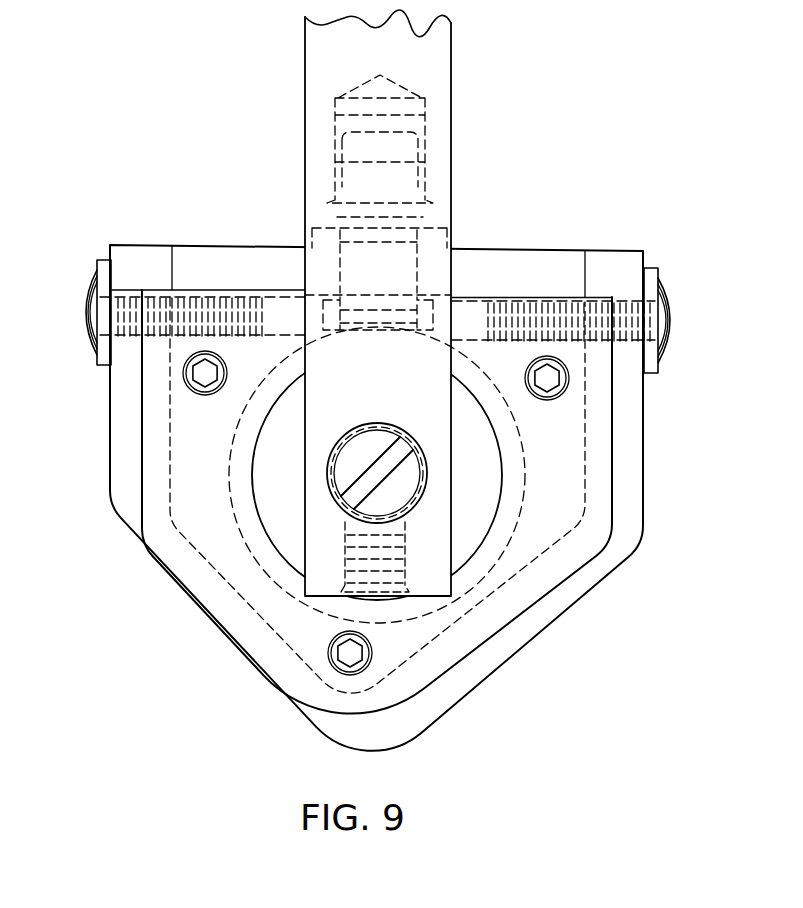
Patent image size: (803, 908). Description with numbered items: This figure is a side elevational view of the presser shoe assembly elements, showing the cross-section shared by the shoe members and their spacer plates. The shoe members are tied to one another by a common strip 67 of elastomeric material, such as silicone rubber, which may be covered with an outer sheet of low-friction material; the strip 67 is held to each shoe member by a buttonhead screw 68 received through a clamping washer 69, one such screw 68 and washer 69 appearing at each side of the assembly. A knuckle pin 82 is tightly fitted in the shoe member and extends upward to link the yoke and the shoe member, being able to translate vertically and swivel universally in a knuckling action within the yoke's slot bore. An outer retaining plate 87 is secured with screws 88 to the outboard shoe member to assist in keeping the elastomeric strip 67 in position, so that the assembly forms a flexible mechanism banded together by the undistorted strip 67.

The strip of elastomeric material 67 is at (641, 249).
The buttonhead screw 68 is at (80, 290).
The clamping washer 69 is at (103, 262).
The knuckle pin 82 is at (343, 170).
The outer retaining plate 87 is at (487, 642).
The screw 88 is at (373, 652).